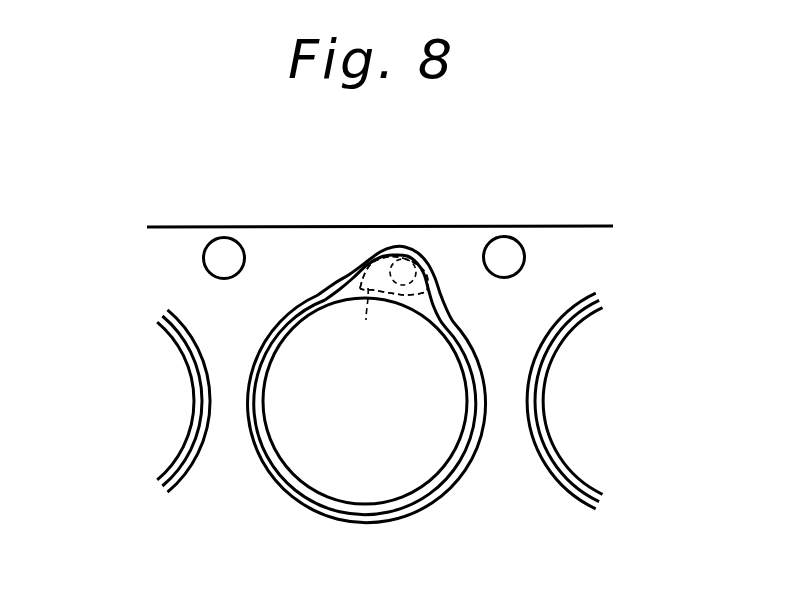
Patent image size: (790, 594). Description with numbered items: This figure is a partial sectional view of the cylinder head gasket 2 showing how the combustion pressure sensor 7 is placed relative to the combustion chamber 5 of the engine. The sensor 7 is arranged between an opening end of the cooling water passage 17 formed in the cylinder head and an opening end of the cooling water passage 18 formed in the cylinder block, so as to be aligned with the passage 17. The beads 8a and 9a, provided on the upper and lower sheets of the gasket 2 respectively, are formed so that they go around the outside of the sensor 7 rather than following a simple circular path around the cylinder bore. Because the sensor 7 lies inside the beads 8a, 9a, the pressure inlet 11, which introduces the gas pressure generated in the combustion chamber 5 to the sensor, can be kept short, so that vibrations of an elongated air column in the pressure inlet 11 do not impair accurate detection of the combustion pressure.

The cylinder head gasket 2 is at (567, 215).
The combustion chamber 5 is at (379, 426).
The combustion pressure sensor 7 is at (402, 258).
The bead 8a is at (302, 300).
The bead 9a is at (365, 385).
The pressure inlet 11 is at (353, 318).
The cooling water passage 17 is at (437, 286).
The cooling water passage 18 is at (394, 275).